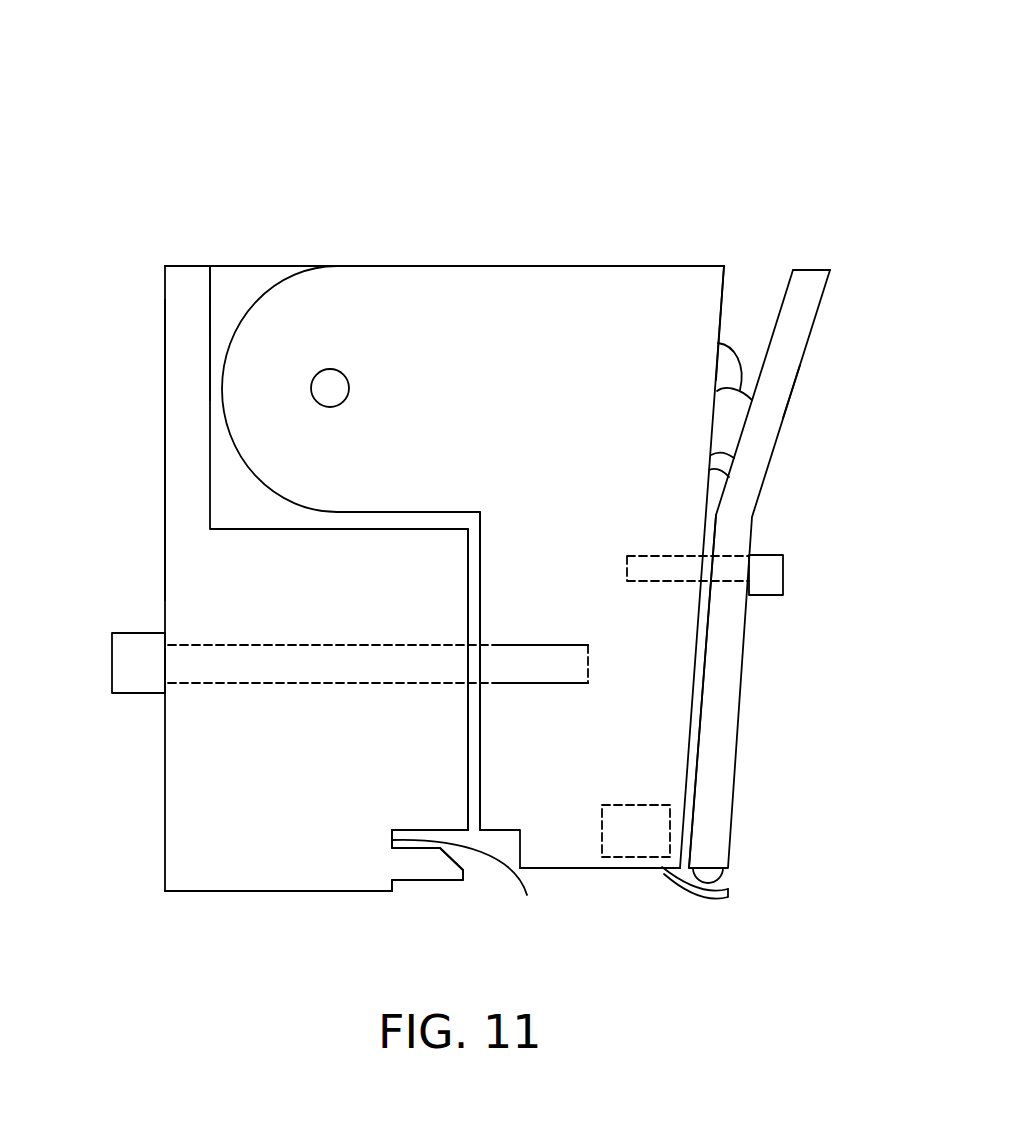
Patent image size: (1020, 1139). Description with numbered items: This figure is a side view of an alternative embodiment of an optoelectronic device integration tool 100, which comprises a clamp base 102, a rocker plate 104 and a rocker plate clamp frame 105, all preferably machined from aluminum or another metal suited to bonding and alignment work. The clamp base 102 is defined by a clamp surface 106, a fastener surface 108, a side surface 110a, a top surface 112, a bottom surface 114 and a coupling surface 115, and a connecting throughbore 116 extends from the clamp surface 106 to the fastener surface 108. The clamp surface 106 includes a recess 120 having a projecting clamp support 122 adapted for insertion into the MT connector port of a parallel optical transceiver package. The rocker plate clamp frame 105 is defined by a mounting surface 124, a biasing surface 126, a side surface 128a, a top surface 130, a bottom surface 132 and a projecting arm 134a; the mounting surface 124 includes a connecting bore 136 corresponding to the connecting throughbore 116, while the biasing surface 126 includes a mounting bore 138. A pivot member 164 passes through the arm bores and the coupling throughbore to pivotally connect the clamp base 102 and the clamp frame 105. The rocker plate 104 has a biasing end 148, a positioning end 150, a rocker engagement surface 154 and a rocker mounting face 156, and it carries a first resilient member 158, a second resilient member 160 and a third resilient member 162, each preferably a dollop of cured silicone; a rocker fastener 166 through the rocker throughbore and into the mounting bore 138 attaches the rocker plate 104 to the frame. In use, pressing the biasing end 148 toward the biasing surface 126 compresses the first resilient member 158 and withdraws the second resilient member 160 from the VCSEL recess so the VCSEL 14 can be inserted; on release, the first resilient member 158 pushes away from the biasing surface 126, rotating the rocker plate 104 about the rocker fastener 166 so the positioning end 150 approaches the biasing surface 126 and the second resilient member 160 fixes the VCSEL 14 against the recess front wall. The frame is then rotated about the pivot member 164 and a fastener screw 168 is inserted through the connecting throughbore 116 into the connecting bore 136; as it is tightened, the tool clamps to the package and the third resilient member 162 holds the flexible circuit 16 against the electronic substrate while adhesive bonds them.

The optoelectronic device integration tool 100 is at (322, 92).
The clamp base 102 is at (163, 782).
The rocker plate 104 is at (817, 322).
The rocker plate clamp frame 105 is at (627, 268).
The clamp surface 106 is at (472, 610).
The fastener surface 108 is at (163, 447).
The side surface 110a is at (260, 867).
The top surface 112 is at (290, 265).
The bottom surface 114 is at (328, 893).
The coupling surface 115 is at (240, 285).
The connecting throughbore 116 is at (285, 663).
The recess 120 is at (469, 886).
The projecting clamp support 122 is at (452, 862).
The mounting surface 124 is at (476, 748).
The biasing surface 126 is at (723, 288).
The side surface 128a is at (530, 292).
The top surface 130 is at (412, 265).
The bottom surface 132 is at (548, 868).
The projecting arm 134a is at (230, 340).
The connecting bore 136 is at (552, 667).
The mounting bore 138 is at (645, 563).
The VCSEL 14 is at (633, 827).
The biasing end 148 is at (813, 268).
The positioning end 150 is at (723, 867).
The rocker engagement surface 154 is at (708, 469).
The rocker mounting face 156 is at (787, 413).
The first resilient member 158 is at (718, 343).
The flexible circuit 16 is at (722, 896).
The second resilient member 160 is at (690, 823).
The third resilient member 162 is at (726, 881).
The pivot member 164 is at (332, 387).
The rocker fastener 166 is at (783, 575).
The fastener screw 168 is at (110, 662).